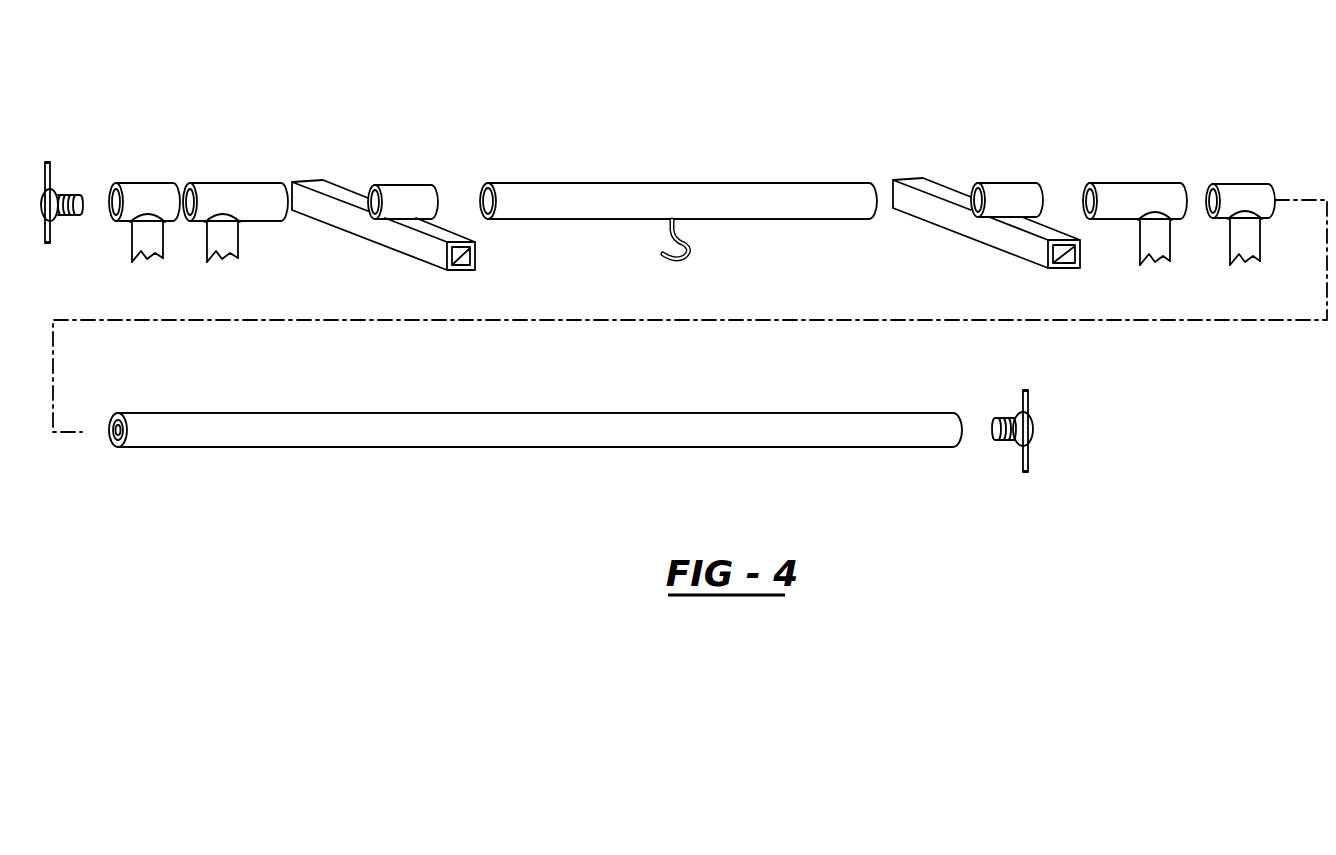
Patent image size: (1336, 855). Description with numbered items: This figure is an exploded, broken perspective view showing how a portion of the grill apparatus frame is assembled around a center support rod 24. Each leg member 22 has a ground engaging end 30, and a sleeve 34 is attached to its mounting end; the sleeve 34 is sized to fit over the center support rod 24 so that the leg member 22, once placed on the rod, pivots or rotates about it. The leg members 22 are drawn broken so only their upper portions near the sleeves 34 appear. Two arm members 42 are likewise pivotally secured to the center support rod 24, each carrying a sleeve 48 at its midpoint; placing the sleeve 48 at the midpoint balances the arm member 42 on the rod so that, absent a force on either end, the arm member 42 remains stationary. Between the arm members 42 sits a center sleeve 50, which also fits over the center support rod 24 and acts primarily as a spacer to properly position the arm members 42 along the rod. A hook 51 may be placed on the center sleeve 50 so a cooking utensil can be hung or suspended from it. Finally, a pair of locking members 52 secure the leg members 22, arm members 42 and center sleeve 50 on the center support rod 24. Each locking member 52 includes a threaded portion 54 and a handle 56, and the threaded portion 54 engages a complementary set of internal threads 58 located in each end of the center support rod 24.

The leg member 22 is at (136, 250).
The center support rod 24 is at (397, 440).
The ground engaging end 30 is at (157, 230).
The sleeve 34 is at (147, 190).
The arm member 42 is at (415, 241).
The sleeve 48 is at (405, 195).
The center sleeve 50 is at (565, 193).
The hook 51 is at (683, 262).
The locking member 52 is at (60, 190).
The threaded portion 54 is at (70, 216).
The handle 56 is at (49, 235).
The internal threads 58 is at (112, 432).